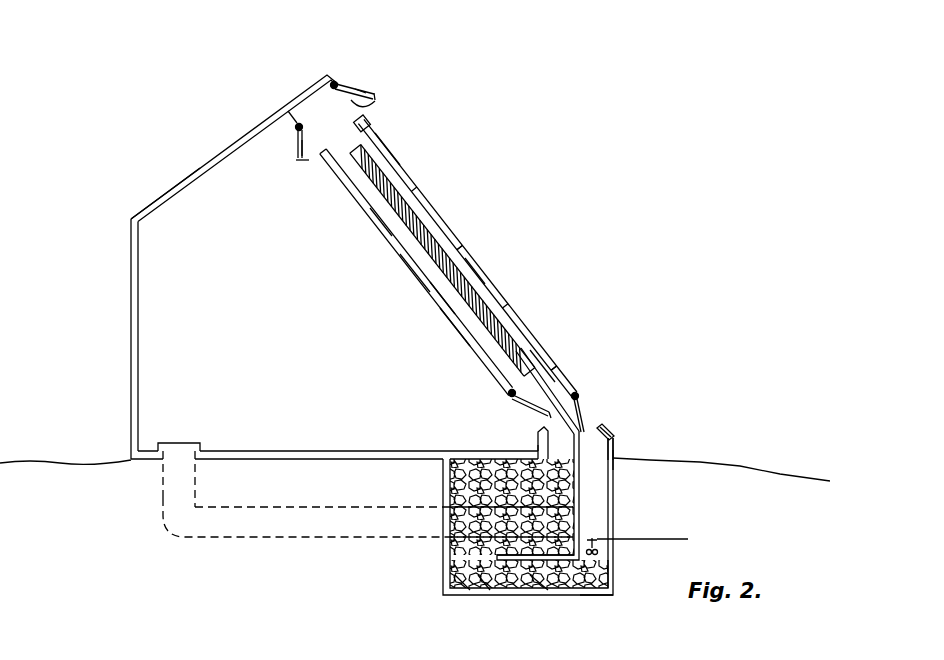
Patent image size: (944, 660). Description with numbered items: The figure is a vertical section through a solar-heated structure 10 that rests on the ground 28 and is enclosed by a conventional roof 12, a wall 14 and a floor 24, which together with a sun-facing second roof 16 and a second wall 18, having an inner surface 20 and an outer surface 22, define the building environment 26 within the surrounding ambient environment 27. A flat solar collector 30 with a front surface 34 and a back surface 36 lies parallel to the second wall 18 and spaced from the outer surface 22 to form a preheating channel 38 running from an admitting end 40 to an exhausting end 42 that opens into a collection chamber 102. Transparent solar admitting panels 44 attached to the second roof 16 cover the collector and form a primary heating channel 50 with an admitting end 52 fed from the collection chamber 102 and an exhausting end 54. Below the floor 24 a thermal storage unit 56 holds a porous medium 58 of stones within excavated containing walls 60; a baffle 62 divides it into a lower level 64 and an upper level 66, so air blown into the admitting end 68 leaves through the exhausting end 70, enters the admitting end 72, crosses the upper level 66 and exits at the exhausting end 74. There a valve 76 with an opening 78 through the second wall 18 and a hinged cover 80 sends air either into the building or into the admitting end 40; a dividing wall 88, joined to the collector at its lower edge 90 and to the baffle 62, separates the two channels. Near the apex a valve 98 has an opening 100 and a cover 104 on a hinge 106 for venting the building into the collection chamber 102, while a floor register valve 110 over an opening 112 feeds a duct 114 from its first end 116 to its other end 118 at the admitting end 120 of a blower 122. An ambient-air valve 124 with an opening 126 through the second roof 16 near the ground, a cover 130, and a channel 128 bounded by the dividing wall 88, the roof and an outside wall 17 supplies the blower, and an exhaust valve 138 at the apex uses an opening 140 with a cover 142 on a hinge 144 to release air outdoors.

The structure 10 is at (188, 146).
The roof 12 is at (162, 197).
The wall 14 is at (134, 352).
The second roof 16 is at (368, 121).
The outside wall 17 is at (596, 514).
The second wall 18 is at (414, 270).
The inner surface 20 is at (440, 288).
The outer surface 22 is at (398, 244).
The floor 24 is at (248, 450).
The building environment 26 is at (300, 343).
The ambient environment 27 is at (592, 243).
The ground 28 is at (738, 464).
The solar collector 30 is at (436, 224).
The front surface 34 is at (456, 242).
The back surface 36 is at (376, 219).
The channel 38 is at (456, 332).
The admitting end 40 is at (506, 392).
The exhausting end 42 is at (323, 166).
The solar admitting panels 44 is at (543, 324).
The channel 50 is at (478, 272).
The admitting end 52 is at (384, 140).
The exhausting end 54 is at (548, 380).
The thermal storage unit 56 is at (436, 584).
The medium 58 is at (458, 480).
The containing walls 60 is at (612, 589).
The baffle 62 is at (484, 590).
The lower level 64 is at (540, 590).
The upper level 66 is at (460, 512).
The admitting end 68 is at (604, 568).
The exhausting end 70 is at (462, 590).
The admitting end 72 is at (470, 547).
The exhausting end 74 is at (582, 482).
The valve 76 is at (516, 426).
The opening 78 is at (538, 434).
The cover 80 is at (526, 402).
The dividing wall 88 is at (612, 432).
The lower edge of collector 90 is at (546, 360).
The valve 98 is at (288, 164).
The opening 100 is at (306, 162).
The collection chamber 102 is at (324, 125).
The cover 104 is at (296, 146).
The hinge 106 is at (282, 110).
The valve 110 is at (170, 438).
The opening 112 is at (186, 452).
The duct 114 is at (278, 546).
The first end 116 is at (168, 467).
The other end 118 is at (600, 532).
The admitting end 120 is at (663, 532).
The blower 122 is at (598, 550).
The valve 124 is at (596, 414).
The opening 126 is at (590, 422).
The channel 128 is at (615, 452).
The cover 130 is at (578, 398).
The valve 138 is at (357, 74).
The opening 140 is at (372, 105).
The cover 142 is at (356, 90).
The hinge 144 is at (338, 82).